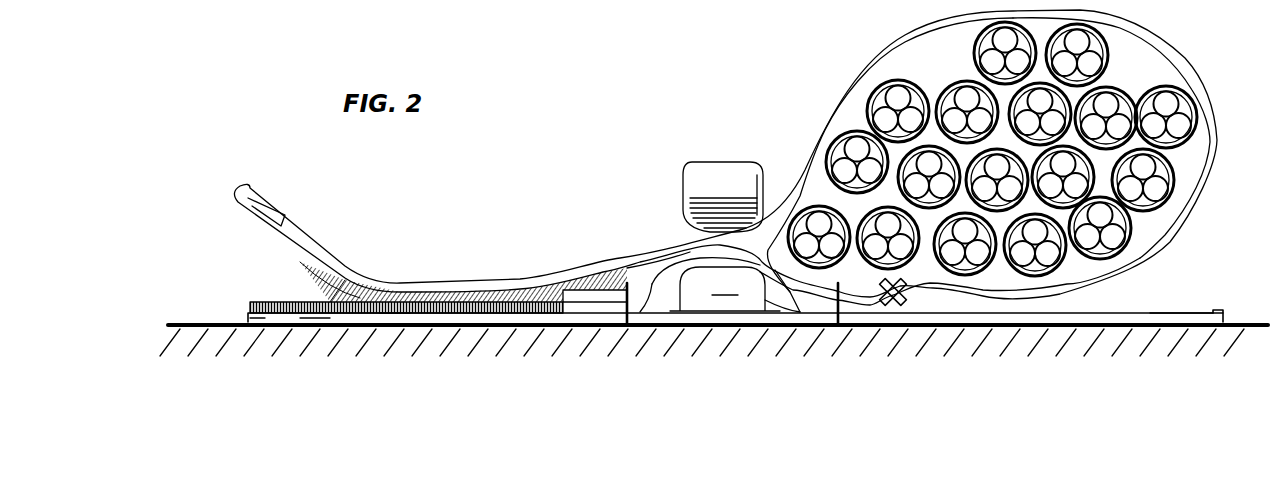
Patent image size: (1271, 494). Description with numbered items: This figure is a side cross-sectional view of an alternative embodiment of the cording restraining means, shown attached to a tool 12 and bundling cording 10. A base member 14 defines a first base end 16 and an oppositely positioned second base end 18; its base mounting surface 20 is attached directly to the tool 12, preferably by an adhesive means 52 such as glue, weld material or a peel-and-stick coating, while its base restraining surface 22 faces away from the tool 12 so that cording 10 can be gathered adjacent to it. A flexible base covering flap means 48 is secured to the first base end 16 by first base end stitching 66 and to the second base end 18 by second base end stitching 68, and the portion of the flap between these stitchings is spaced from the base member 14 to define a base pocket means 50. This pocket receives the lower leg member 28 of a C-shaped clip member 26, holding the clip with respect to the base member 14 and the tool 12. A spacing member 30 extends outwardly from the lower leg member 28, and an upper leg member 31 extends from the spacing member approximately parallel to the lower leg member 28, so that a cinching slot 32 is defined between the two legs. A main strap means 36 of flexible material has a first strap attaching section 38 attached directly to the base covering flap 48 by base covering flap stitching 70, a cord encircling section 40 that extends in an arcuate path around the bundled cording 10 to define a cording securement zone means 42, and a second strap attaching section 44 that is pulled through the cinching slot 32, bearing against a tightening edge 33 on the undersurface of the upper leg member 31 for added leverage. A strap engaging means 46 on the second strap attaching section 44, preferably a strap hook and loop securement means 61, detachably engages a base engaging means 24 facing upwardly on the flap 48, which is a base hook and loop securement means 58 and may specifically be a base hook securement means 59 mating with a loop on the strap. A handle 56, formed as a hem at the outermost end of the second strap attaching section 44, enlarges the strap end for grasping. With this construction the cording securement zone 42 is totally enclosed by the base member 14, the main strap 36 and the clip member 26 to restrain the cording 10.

The cording 10 is at (1075, 14).
The tool 12 is at (190, 324).
The base member 14 is at (762, 326).
The first base end 16 is at (1212, 326).
The second base end 18 is at (256, 316).
The base mounting surface 20 is at (1175, 312).
The base restraining surface 22 is at (583, 303).
The base engaging means 24 is at (252, 303).
The C-shaped clip member 26 is at (682, 181).
The lower leg member 28 is at (725, 289).
The spacing member 30 is at (675, 263).
The upper leg member 31 is at (718, 176).
The cinching slot 32 is at (712, 238).
The tightening edge 33 is at (728, 235).
The main strap means 36 is at (1176, 58).
The first strap attaching section 38 is at (975, 298).
The cord encircling section 40 is at (1193, 182).
The cording securement zone means 42 is at (1107, 167).
The second strap attaching section 44 is at (413, 280).
The strap engaging means 46 is at (300, 263).
The base covering flap means 48 is at (788, 286).
The base pocket means 50 is at (676, 296).
The adhesive means 52 is at (315, 320).
The handle 56 is at (249, 187).
The base hook and loop securement means 58 is at (262, 318).
The base hook securement means 59 is at (395, 314).
The strap hook and loop securement means 61 is at (320, 282).
The first base end stitching 66 is at (838, 326).
The second base end stitching 68 is at (624, 304).
The base covering flap stitching 70 is at (905, 306).